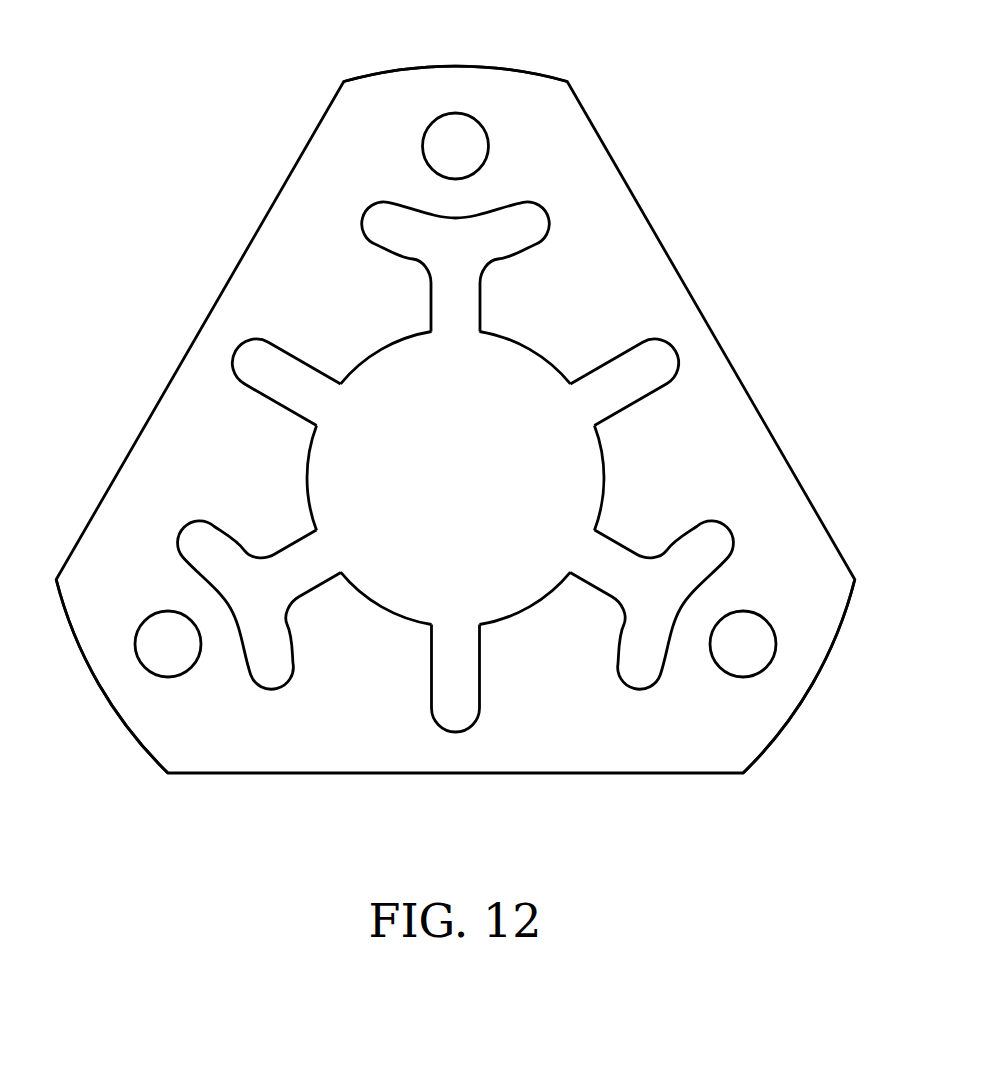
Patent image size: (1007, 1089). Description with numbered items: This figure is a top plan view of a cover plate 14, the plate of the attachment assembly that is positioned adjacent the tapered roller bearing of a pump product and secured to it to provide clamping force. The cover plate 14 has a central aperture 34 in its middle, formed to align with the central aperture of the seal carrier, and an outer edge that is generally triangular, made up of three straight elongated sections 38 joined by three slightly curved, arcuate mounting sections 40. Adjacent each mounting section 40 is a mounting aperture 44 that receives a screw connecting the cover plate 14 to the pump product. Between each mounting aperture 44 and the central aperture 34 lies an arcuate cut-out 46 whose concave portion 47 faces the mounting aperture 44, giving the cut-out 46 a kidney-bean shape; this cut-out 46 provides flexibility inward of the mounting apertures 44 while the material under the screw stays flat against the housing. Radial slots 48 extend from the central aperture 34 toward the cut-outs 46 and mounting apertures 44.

The cover plate 14 is at (693, 44).
The central aperture 34 is at (472, 488).
The straight elongated section 38 is at (201, 328).
The arcuate mounting section 40 is at (458, 63).
The mounting aperture 44 is at (431, 123).
The cut-out 46 is at (550, 218).
The concave portion 47 is at (500, 208).
The radial slot 48 is at (431, 305).